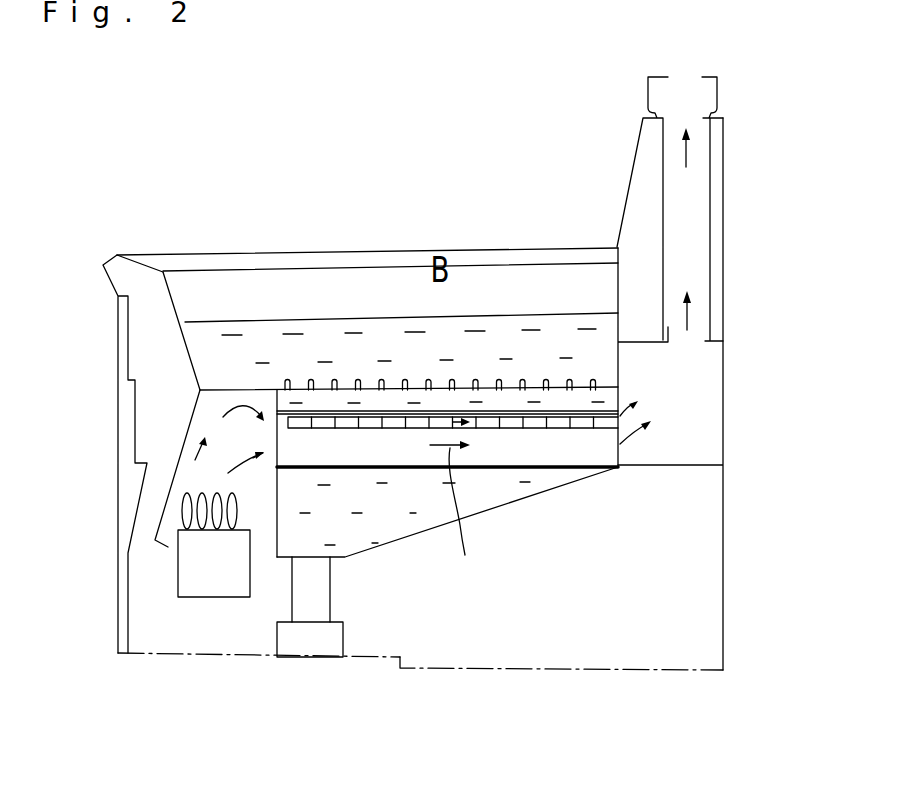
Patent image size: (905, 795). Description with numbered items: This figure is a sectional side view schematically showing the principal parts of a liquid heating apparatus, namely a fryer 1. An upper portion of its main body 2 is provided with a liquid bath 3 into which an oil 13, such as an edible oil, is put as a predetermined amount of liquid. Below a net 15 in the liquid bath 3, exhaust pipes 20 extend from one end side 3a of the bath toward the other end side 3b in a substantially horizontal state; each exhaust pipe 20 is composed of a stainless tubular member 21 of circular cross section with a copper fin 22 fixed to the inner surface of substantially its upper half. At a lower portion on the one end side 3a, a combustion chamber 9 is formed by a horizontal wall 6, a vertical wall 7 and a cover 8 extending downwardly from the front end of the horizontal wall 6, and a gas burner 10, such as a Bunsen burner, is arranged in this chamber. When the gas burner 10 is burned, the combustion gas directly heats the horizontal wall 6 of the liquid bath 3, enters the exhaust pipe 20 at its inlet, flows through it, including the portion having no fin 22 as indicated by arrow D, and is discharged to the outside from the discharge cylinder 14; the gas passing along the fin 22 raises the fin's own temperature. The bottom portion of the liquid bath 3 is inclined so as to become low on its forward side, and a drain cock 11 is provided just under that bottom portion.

The fryer 1 is at (94, 214).
The main body 2 is at (725, 490).
The liquid bath 3 is at (174, 283).
The one end side of the liquid bath 3a is at (193, 348).
The other end side of the liquid bath 3b is at (613, 366).
The horizontal wall 6 is at (200, 386).
The vertical wall 7 is at (275, 510).
The cover 8 is at (177, 455).
The combustion chamber 9 is at (215, 465).
The gas burner 10 is at (178, 570).
The drain cock 11 is at (313, 648).
The oil 13 is at (362, 332).
The discharge cylinder 14 is at (710, 220).
The net 15 is at (528, 387).
The exhaust pipe 20 is at (407, 485).
The tubular member 21 is at (510, 470).
The fin 22 is at (573, 425).